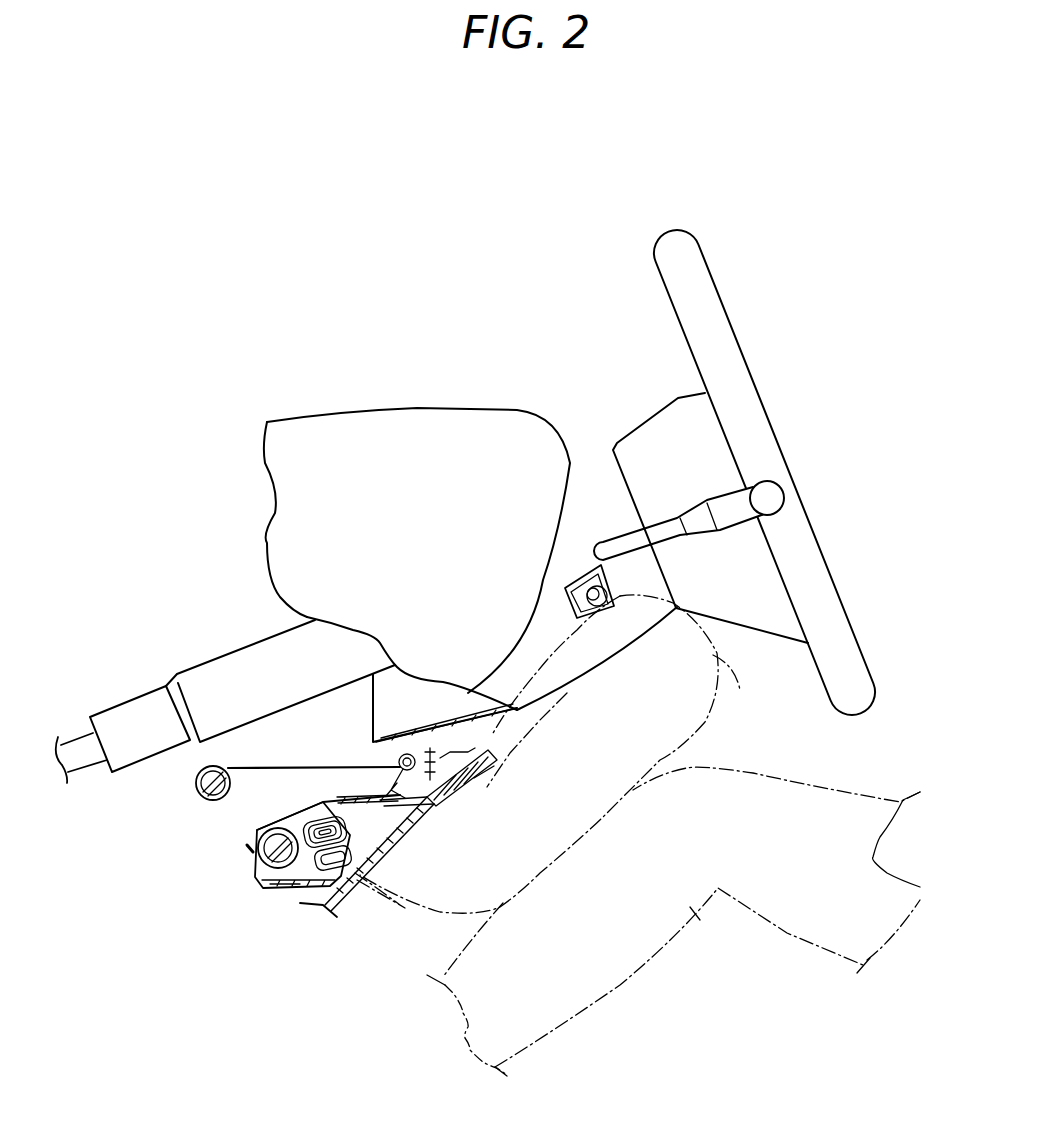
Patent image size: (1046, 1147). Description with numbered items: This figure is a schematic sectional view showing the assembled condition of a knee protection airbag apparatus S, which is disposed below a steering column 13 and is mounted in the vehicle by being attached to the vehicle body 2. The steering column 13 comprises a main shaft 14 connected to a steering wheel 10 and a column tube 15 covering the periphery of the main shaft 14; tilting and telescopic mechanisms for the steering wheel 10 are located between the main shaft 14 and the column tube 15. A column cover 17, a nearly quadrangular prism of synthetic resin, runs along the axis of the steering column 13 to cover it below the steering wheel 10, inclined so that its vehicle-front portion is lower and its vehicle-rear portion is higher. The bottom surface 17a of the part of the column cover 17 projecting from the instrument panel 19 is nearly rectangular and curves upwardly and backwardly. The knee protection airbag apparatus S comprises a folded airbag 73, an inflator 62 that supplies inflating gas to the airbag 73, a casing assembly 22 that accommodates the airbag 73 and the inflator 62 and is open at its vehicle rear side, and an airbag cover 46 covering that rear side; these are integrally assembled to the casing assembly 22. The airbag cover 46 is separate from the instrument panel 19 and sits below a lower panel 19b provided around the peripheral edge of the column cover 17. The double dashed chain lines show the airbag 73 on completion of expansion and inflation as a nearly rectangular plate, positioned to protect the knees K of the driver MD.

The steering wheel 10 is at (748, 268).
The steering column 13 is at (171, 632).
The main shaft 14 is at (79, 745).
The column tube 15 is at (150, 698).
The column cover 17 is at (590, 455).
The bottom surface 17a is at (625, 648).
The instrument panel 19 is at (405, 418).
The lower panel 19b is at (475, 787).
The bolt (B) 2 is at (200, 791).
The casing assembly 22 is at (313, 800).
The airbag cover 46 is at (402, 840).
The inflator 62 is at (247, 849).
The airbag 73 is at (723, 662).
The knee protection airbag apparatus S is at (220, 915).
The knees K is at (693, 917).
The driver MD is at (797, 943).